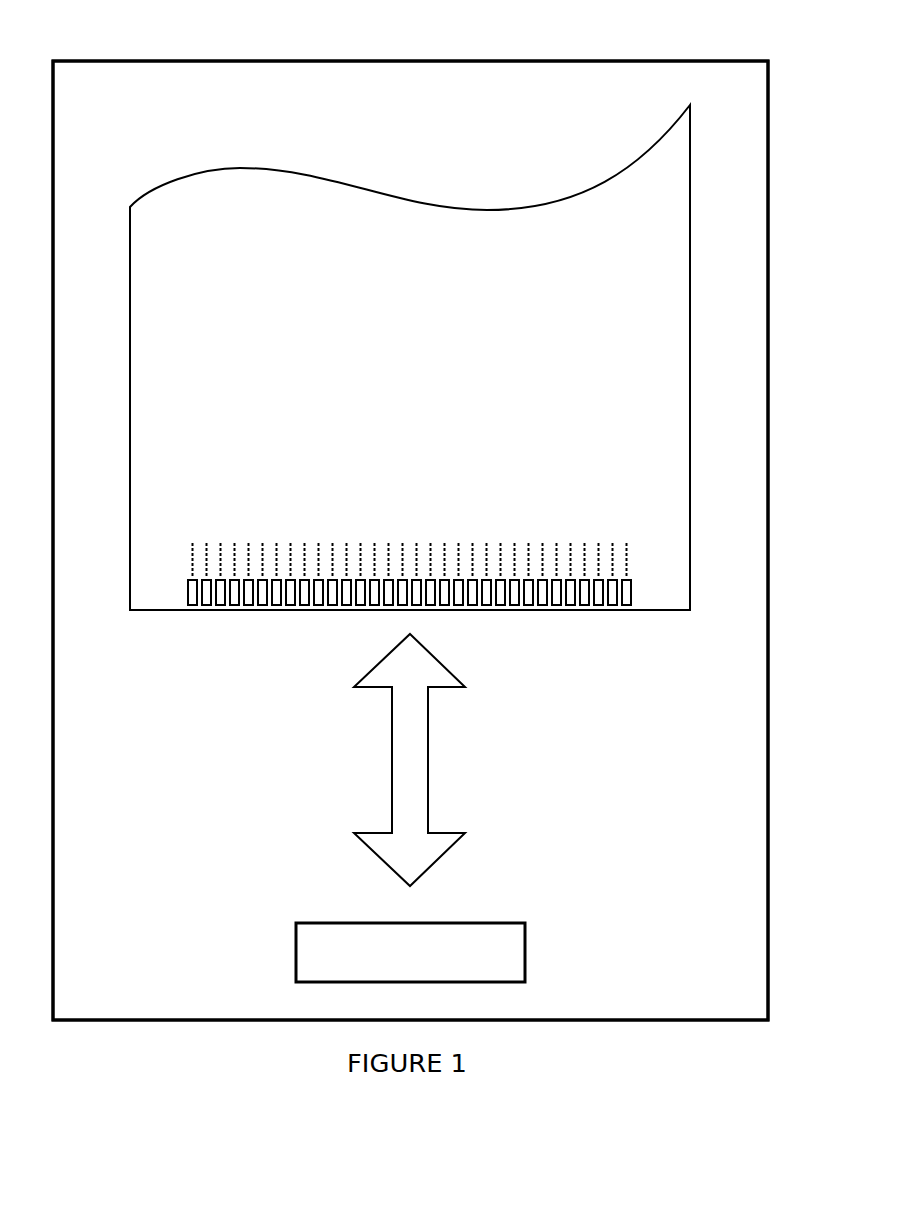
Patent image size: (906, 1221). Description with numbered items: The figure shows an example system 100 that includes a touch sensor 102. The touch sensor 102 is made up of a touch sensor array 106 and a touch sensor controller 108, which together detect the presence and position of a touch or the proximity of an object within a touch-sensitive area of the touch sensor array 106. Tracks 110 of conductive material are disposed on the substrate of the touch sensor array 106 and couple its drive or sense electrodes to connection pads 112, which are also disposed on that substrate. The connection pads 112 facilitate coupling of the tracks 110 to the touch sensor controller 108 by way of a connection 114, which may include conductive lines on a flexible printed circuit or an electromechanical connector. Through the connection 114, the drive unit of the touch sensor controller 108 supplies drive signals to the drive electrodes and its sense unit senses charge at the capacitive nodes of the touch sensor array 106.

The system 100 is at (122, 19).
The touch sensor 102 is at (545, 60).
The touch sensor array 106 is at (165, 333).
The touch sensor controller 108 is at (296, 946).
The tracks 110 is at (185, 562).
The connection pads 112 is at (182, 591).
The connection 114 is at (391, 753).